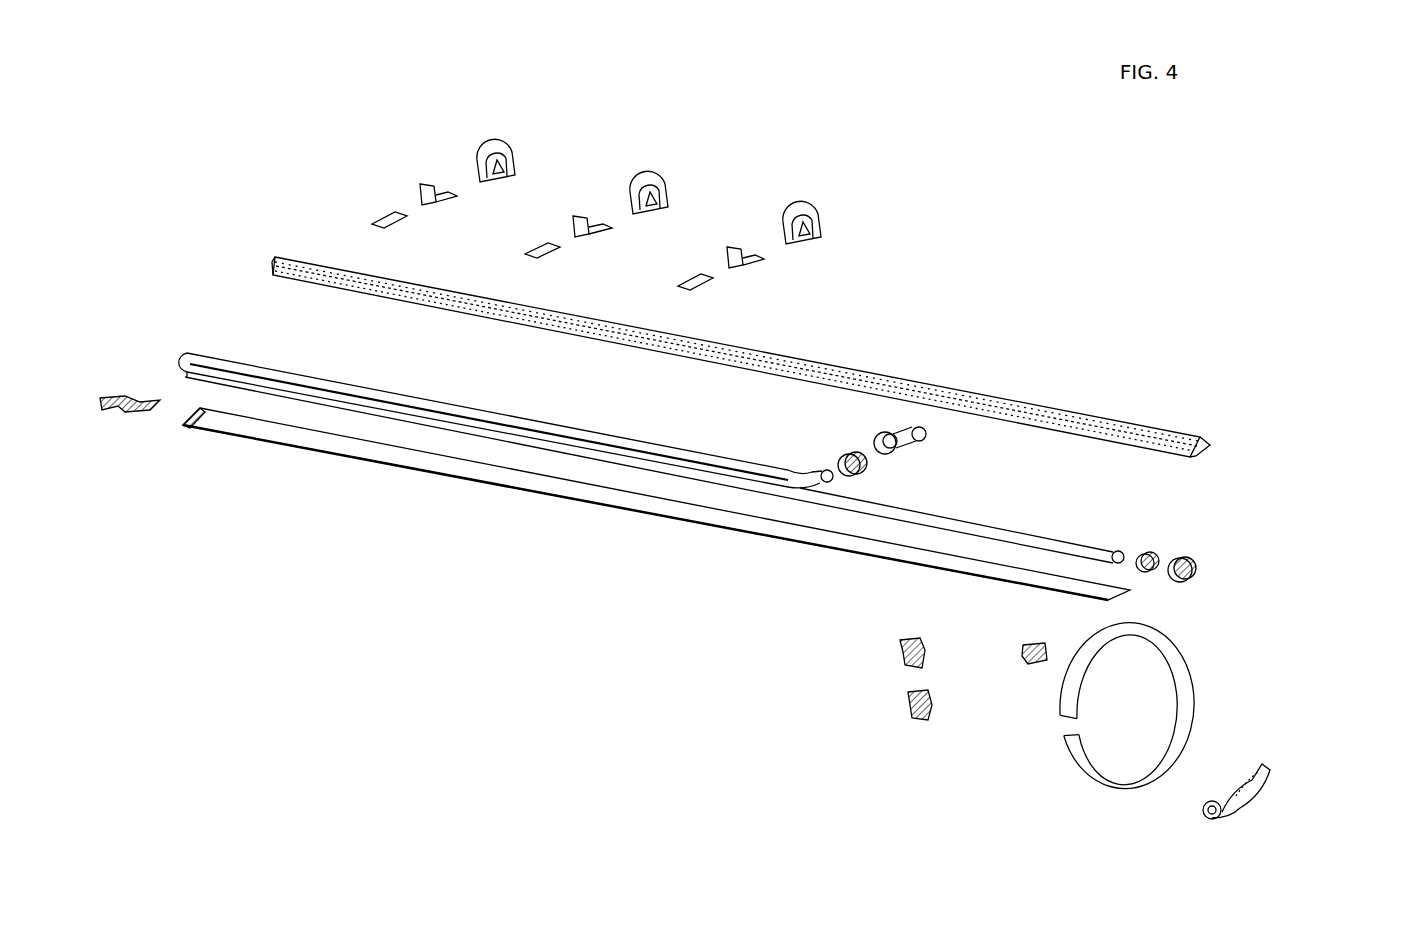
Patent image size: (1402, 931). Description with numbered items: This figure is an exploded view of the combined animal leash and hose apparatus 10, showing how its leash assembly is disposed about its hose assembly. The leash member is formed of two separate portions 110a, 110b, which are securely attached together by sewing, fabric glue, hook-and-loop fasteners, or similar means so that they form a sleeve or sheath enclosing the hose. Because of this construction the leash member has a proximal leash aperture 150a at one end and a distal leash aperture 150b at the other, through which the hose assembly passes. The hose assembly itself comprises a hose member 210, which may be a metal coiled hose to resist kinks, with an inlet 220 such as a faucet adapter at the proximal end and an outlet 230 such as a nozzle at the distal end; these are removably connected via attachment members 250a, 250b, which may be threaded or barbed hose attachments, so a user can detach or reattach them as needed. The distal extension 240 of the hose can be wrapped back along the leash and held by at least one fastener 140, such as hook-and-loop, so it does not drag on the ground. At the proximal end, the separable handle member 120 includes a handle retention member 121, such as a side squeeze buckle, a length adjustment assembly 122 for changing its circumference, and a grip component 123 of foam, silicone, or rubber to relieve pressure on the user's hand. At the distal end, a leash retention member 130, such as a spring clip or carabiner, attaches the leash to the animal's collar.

The apparatus 10 is at (372, 606).
The leash member portion 110a is at (612, 503).
The leash member portion 110b is at (982, 388).
The handle member 120 is at (1193, 670).
The handle retention member 121 is at (899, 673).
The length adjustment assembly 122 is at (1025, 672).
The grip component 123 is at (1293, 793).
The leash retention member 130 is at (113, 418).
The fastener 140 is at (532, 149).
The proximal leash aperture 150a is at (1205, 441).
The distal leash aperture 150b is at (275, 256).
The hose member 210 is at (1060, 526).
The inlet 220 is at (1202, 548).
The outlet 230 is at (926, 446).
The distal extension 240 is at (233, 352).
The attachment member 250a is at (1158, 545).
The attachment member 250b is at (835, 455).